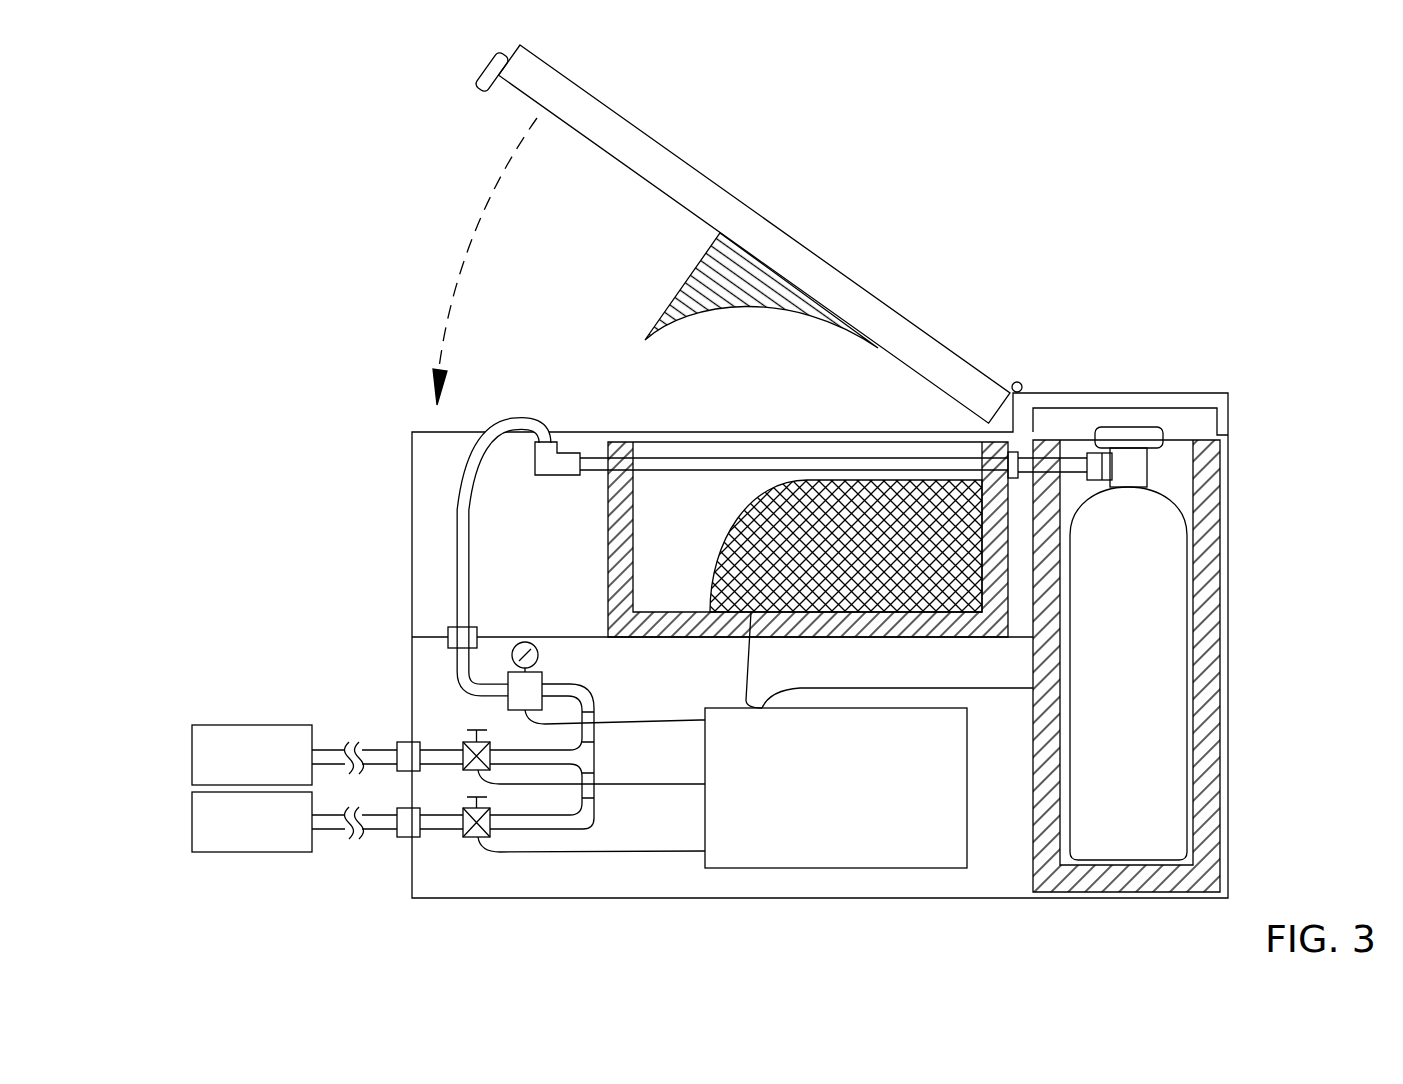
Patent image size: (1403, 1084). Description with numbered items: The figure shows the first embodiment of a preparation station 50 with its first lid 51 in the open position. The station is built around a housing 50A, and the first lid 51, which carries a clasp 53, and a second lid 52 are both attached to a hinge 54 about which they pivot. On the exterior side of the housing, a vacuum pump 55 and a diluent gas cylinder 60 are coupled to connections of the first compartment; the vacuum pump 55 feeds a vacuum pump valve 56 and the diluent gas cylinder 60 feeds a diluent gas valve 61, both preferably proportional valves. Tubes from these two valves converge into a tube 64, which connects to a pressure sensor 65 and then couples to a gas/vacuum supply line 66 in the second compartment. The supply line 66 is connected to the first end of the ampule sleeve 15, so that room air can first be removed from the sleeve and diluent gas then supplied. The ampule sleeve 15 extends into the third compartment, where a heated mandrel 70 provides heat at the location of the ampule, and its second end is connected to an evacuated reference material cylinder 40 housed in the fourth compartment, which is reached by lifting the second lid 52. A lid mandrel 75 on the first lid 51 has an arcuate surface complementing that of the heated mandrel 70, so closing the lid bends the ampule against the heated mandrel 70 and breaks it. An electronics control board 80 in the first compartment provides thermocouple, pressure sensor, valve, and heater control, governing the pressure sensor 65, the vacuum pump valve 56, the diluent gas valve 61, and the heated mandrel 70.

The preparation station 50 is at (280, 125).
The housing 50A is at (405, 510).
The first lid 51 is at (663, 157).
The second lid 52 is at (1197, 393).
The clasp 53 is at (483, 92).
The hinge 54 is at (1022, 382).
The lid mandrel 75 is at (697, 278).
The ampule sleeve 15 is at (700, 467).
The heated mandrel 70 is at (863, 513).
The gas/vacuum supply line 66 is at (473, 480).
The pressure sensor 65 is at (510, 657).
The tube 64 is at (458, 665).
The vacuum pump valve 56 is at (465, 743).
The diluent gas valve 61 is at (470, 838).
The vacuum pump 55 is at (243, 725).
The diluent gas cylinder 60 is at (233, 852).
The reference material cylinder 40 is at (1150, 572).
The electronics control board 80 is at (848, 850).